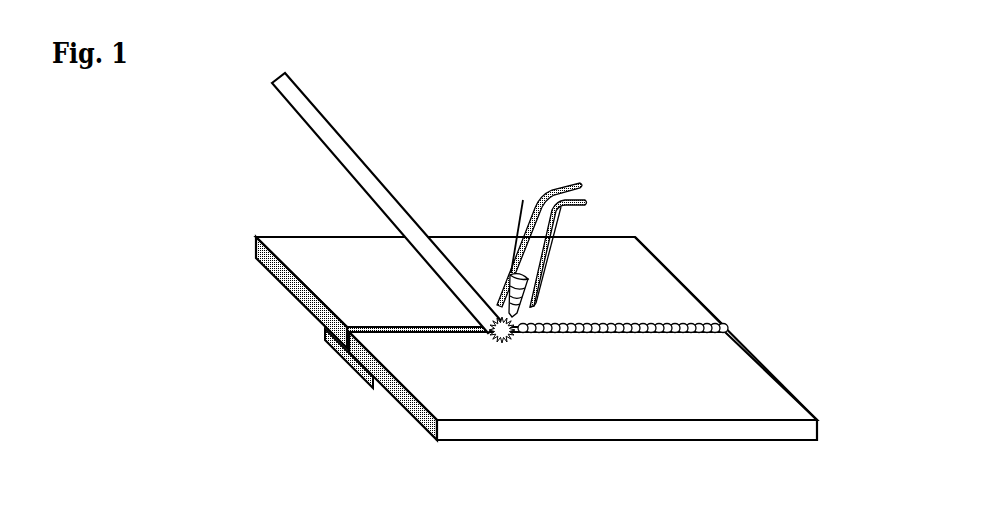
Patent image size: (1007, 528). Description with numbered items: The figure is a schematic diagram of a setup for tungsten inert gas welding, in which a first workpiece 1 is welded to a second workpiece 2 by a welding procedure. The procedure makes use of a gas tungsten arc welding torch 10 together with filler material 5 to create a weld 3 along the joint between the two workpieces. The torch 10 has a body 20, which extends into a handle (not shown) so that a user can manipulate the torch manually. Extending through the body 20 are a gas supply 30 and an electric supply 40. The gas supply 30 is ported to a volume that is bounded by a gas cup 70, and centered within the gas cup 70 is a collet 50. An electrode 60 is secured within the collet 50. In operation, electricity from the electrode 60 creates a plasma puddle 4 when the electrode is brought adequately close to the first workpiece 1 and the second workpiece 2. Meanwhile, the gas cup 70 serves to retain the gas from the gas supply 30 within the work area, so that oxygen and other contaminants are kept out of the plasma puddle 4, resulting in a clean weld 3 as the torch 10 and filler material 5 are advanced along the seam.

The first workpiece 1 is at (682, 313).
The second workpiece 2 is at (742, 375).
The weld 3 is at (728, 325).
The plasma puddle 4 is at (508, 337).
The filler material 5 is at (335, 131).
The gas tungsten arc welding torch 10 is at (598, 214).
The body 20 is at (513, 233).
The gas supply 30 is at (577, 182).
The electric supply 40 is at (587, 201).
The collet 50 is at (511, 273).
The electrode 60 is at (536, 298).
The gas cup 70 is at (538, 306).